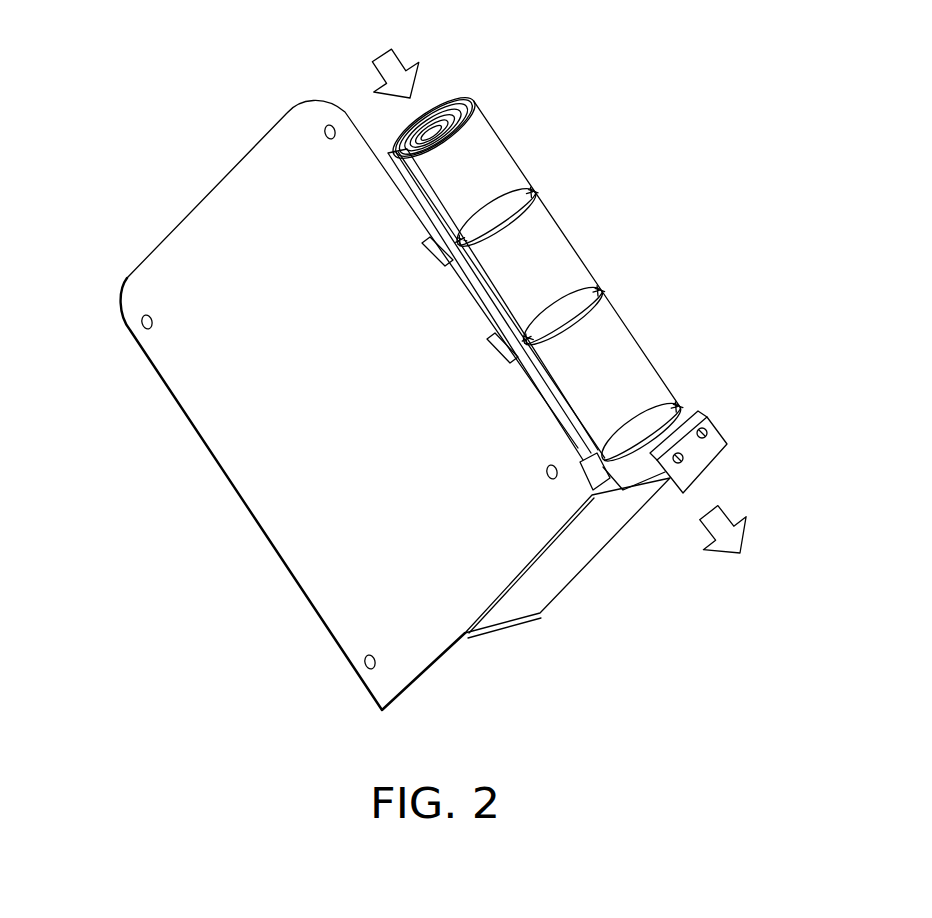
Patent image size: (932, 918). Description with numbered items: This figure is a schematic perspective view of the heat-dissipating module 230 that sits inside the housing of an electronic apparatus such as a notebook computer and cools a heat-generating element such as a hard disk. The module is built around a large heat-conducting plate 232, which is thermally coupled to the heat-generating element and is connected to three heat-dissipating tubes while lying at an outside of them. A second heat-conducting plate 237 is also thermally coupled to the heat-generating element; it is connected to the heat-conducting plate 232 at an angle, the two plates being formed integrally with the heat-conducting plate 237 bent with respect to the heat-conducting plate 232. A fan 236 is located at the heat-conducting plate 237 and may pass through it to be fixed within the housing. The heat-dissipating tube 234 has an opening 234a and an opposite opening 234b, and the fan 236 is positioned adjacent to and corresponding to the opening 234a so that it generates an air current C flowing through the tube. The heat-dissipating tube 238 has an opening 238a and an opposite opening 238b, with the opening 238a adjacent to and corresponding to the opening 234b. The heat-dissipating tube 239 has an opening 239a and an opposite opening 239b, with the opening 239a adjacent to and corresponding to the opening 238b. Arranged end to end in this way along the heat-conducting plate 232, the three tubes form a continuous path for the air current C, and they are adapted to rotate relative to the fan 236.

The heat-dissipating module 230 is at (905, 672).
The heat-conducting plate 232 is at (230, 450).
The heat-dissipating tube 234 is at (643, 380).
The opening 234a is at (680, 410).
The opening 234b is at (540, 333).
The fan 236 is at (708, 430).
The heat-conducting plate 237 is at (587, 553).
The heat-dissipating tube 238 is at (568, 270).
The opening 238a is at (603, 296).
The opening 238b is at (520, 206).
The heat-dissipating tube 239 is at (503, 163).
The opening 239a is at (537, 203).
The opening 239b is at (455, 100).
The air current C is at (740, 530).